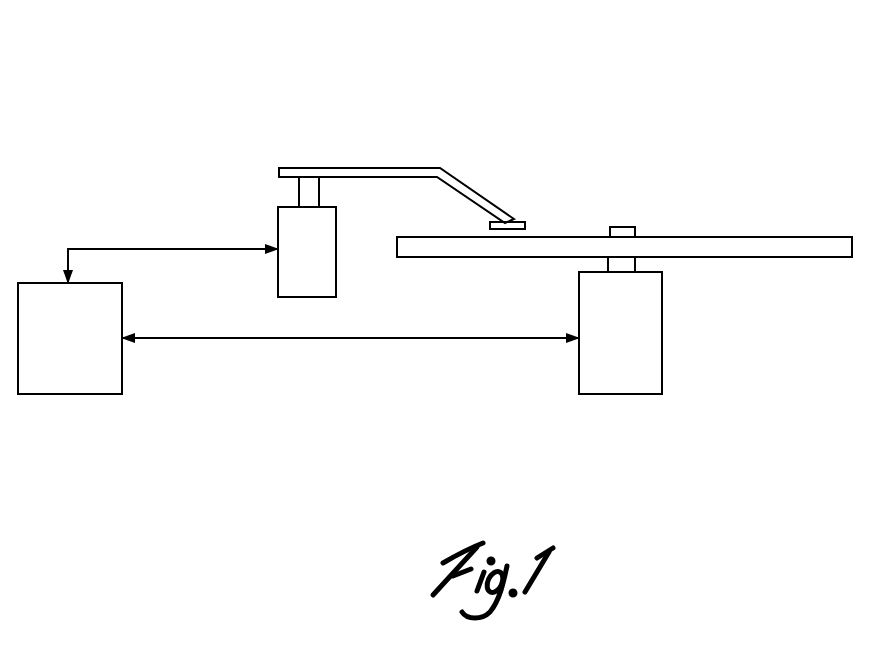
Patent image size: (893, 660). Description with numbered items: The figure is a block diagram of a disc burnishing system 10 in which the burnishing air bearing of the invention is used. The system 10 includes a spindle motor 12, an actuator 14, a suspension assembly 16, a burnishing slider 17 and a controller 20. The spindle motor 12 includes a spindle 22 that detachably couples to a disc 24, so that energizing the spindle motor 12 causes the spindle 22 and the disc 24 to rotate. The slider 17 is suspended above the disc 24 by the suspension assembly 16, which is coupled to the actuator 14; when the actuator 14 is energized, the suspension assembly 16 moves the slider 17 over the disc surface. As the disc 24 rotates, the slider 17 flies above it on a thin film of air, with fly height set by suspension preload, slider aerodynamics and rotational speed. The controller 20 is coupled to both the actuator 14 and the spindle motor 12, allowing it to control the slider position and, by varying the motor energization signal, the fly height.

The disc burnishing system 10 is at (478, 116).
The spindle motor 12 is at (662, 330).
The actuator 14 is at (278, 223).
The suspension assembly 16 is at (334, 166).
The burnishing slider 17 is at (522, 219).
The controller 20 is at (84, 356).
The spindle 22 is at (625, 227).
The disc 24 is at (790, 238).